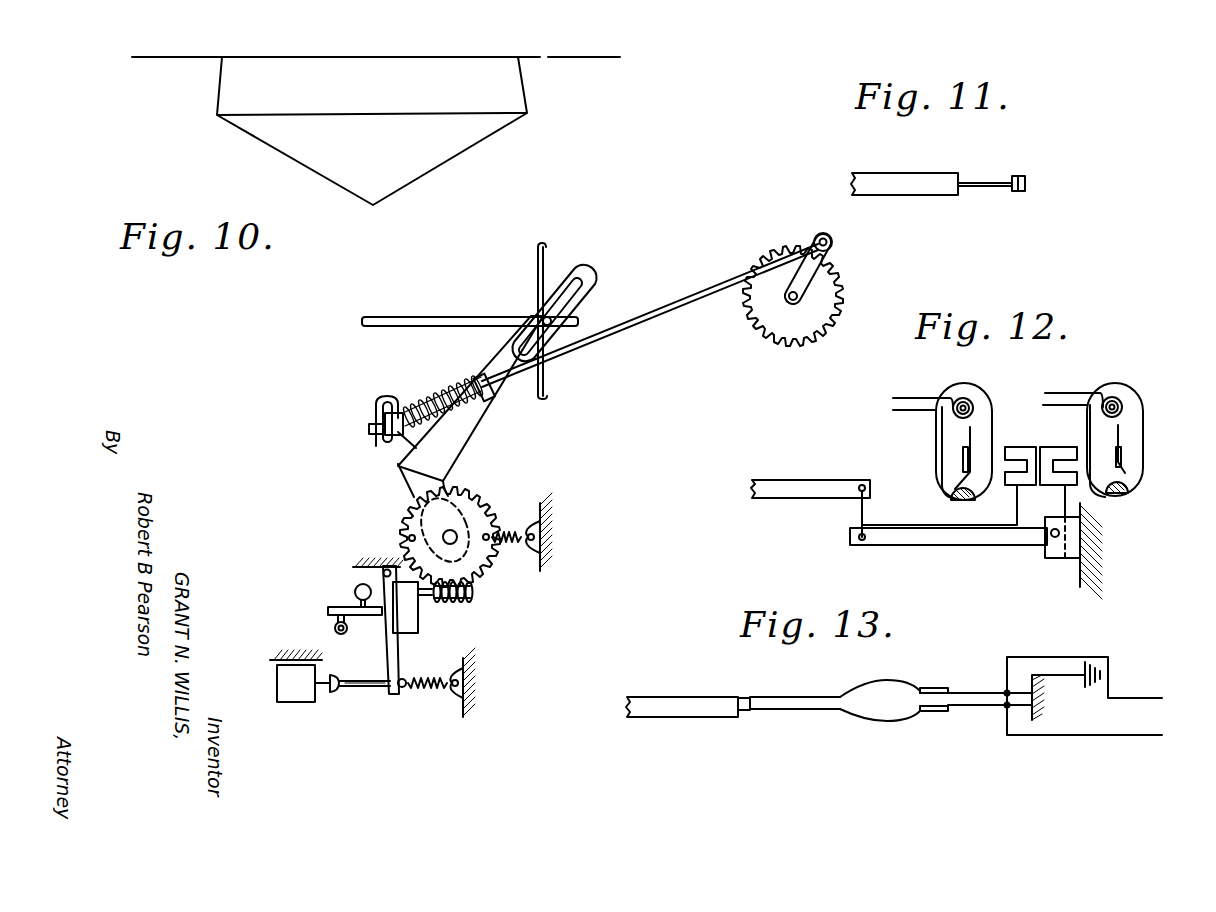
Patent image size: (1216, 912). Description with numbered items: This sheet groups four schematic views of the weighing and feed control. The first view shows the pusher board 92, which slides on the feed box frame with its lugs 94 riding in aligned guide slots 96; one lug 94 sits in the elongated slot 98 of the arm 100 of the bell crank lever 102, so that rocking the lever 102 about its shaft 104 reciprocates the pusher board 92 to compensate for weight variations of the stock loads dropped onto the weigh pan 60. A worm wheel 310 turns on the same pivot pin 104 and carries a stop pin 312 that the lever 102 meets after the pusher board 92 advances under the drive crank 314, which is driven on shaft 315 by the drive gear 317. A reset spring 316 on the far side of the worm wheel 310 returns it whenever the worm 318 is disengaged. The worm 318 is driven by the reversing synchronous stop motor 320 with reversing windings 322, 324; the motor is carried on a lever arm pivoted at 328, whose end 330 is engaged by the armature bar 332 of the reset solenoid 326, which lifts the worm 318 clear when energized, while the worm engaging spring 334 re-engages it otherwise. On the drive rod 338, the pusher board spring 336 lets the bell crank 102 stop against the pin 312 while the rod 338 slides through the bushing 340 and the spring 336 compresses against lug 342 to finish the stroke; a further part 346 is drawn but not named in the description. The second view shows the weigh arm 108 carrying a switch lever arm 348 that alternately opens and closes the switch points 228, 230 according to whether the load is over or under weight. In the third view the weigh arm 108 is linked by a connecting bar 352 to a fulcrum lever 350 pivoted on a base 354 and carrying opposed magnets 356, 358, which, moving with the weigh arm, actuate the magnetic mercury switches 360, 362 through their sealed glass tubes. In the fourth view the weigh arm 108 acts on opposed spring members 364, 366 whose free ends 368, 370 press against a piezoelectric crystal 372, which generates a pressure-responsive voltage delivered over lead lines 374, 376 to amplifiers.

In FIG. 10, the weigh pan 60 is at (418, 166).
In FIG. 10, the pusher board 92 is at (546, 266).
In FIG. 10, the lugs 94 is at (573, 315).
In FIG. 10, the guide slots 96 is at (457, 312).
In FIG. 10, the elongated slot 98 is at (588, 287).
In FIG. 10, the arm 100 is at (467, 425).
In FIG. 10, the bell crank lever 102 is at (398, 476).
In FIG. 10, the shaft 104 is at (457, 531).
In FIG. 11, the weigh arm 108 is at (902, 165).
In FIG. 12, the weigh arm 108 is at (805, 473).
In FIG. 13, the weigh arm 108 is at (700, 688).
In FIG. 11, the switch point 228 is at (1018, 150).
In FIG. 11, the switch point 230 is at (1018, 222).
In FIG. 10, the worm wheel 310 is at (475, 558).
In FIG. 10, the stop pin 312 is at (402, 535).
In FIG. 10, the drive crank 314 is at (810, 258).
In FIG. 10, the shaft 315 is at (802, 293).
In FIG. 10, the drive gear 317 is at (838, 298).
In FIG. 10, the reset spring 316 is at (518, 530).
In FIG. 10, the worm 318 is at (467, 603).
In FIG. 10, the pusher board stop motor 320 is at (405, 625).
In FIG. 10, the reversing winding 322 is at (355, 593).
In FIG. 10, the reversing winding 324 is at (332, 630).
In FIG. 10, the pusher board reset solenoid 326 is at (393, 648).
In FIG. 10, the pivot 328 is at (380, 572).
In FIG. 10, the end 330 is at (387, 668).
In FIG. 10, the armature bar 332 is at (362, 686).
In FIG. 10, the worm engaging spring 334 is at (426, 687).
In FIG. 10, the pusher board spring 336 is at (450, 385).
In FIG. 10, the drive rod 338 is at (597, 340).
In FIG. 10, the bushing 340 is at (372, 414).
In FIG. 10, the lug 342 is at (483, 378).
In FIG. 10, the solenoid block 346 is at (277, 683).
In FIG. 11, the switch lever arm 348 is at (982, 165).
In FIG. 12, the fulcrum lever 350 is at (937, 538).
In FIG. 12, the connecting bar 352 is at (862, 512).
In FIG. 12, the base 354 is at (1068, 560).
In FIG. 12, the magnet 356 is at (1037, 428).
In FIG. 12, the magnet 358 is at (1068, 450).
In FIG. 12, the magnetic mercury switch 360 is at (937, 445).
In FIG. 12, the magnetic mercury switch 362 is at (1143, 410).
In FIG. 13, the spring member 364 is at (810, 687).
In FIG. 13, the spring member 366 is at (795, 710).
In FIG. 13, the free end 368 is at (955, 688).
In FIG. 13, the free end 370 is at (940, 712).
In FIG. 13, the piezoelectric crystal 372 is at (926, 687).
In FIG. 13, the lead line 374 is at (1080, 648).
In FIG. 13, the lead line 376 is at (1059, 713).